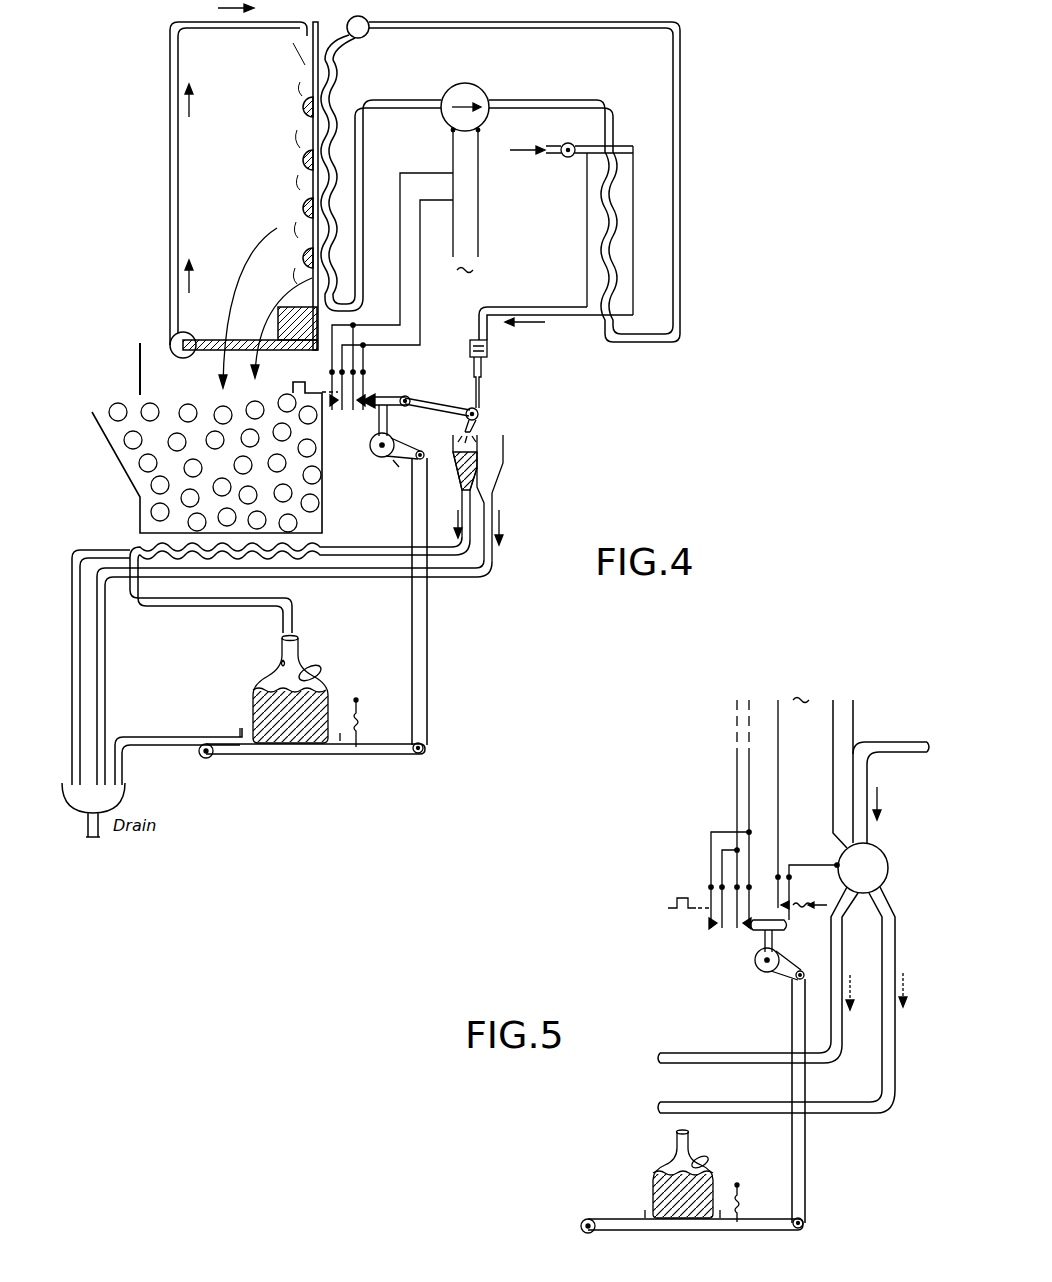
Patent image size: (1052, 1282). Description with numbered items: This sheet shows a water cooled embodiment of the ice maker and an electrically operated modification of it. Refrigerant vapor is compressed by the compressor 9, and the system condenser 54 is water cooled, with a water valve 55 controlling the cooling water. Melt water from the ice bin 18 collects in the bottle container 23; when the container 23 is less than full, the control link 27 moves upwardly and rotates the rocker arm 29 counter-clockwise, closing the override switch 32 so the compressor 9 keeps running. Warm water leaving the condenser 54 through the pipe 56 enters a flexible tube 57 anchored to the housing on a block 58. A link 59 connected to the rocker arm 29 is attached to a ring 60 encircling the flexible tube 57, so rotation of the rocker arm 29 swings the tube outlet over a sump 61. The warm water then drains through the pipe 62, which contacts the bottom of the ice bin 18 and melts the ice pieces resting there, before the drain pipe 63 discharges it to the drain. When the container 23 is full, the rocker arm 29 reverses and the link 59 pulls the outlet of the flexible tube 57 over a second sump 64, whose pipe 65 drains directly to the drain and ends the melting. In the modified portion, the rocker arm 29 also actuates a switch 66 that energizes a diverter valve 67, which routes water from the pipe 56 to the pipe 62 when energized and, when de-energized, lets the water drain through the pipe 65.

In FIG. 4, the compressor 9 is at (481, 86).
In FIG. 4, the ice bin 18 is at (325, 506).
In FIG. 4, the bottle container 23 is at (249, 675).
In FIG. 5, the bottle container 23 is at (652, 1161).
In FIG. 4, the control link 27 is at (433, 671).
In FIG. 5, the control link 27 is at (823, 1178).
In FIG. 4, the rocker arm 29 is at (389, 422).
In FIG. 5, the rocker arm 29 is at (775, 938).
In FIG. 4, the override switch 32 is at (355, 412).
In FIG. 5, the override switch 32 is at (741, 934).
In FIG. 4, the condenser 54 is at (637, 151).
In FIG. 4, the water valve 55 is at (565, 143).
In FIG. 4, the pipe 56 is at (560, 307).
In FIG. 5, the pipe 56 is at (889, 732).
In FIG. 4, the flexible tube 57 is at (468, 393).
In FIG. 4, the block 58 is at (490, 347).
In FIG. 4, the link 59 is at (437, 400).
In FIG. 4, the ring 60 is at (478, 415).
In FIG. 4, the sump 61 is at (453, 485).
In FIG. 4, the pipe 62 is at (382, 549).
In FIG. 5, the pipe 62 is at (745, 1054).
In FIG. 4, the drain pipe 63 is at (70, 641).
In FIG. 4, the sump 64 is at (510, 472).
In FIG. 4, the pipe 65 is at (377, 576).
In FIG. 5, the pipe 65 is at (745, 1103).
In FIG. 5, the switch 66 is at (789, 899).
In FIG. 5, the diverter valve 67 is at (886, 866).